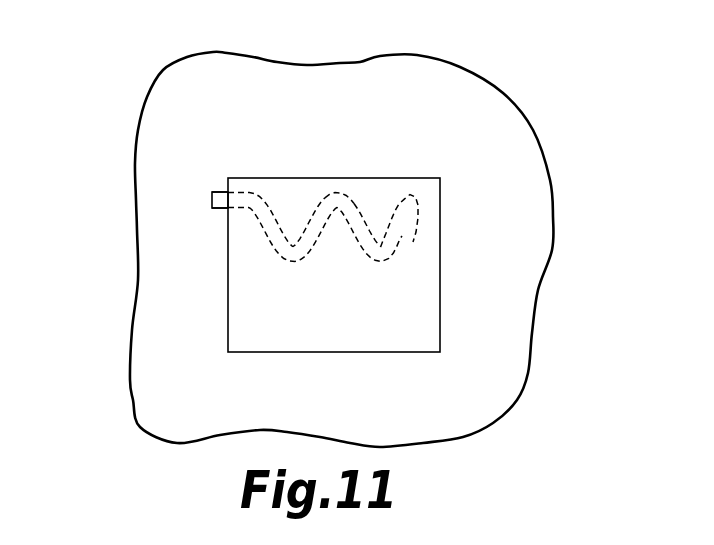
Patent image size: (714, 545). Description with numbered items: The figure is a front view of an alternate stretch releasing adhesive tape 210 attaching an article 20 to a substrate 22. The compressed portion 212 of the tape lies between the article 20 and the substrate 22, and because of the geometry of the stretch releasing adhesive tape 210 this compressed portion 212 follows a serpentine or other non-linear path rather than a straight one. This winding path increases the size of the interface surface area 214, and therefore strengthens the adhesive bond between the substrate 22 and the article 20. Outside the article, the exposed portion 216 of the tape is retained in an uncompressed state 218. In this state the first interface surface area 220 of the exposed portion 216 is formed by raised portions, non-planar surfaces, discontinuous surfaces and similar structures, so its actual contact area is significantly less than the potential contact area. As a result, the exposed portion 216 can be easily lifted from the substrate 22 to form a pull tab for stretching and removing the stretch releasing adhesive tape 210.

The article 20 is at (287, 336).
The substrate 22 is at (212, 406).
The stretch releasing adhesive tape 210 is at (338, 167).
The compressed portion 212 is at (358, 204).
The interface surface area 214 is at (404, 237).
The exposed portion 216 is at (217, 210).
The uncompressed state 218 is at (212, 195).
The first interface surface area 220 is at (212, 201).